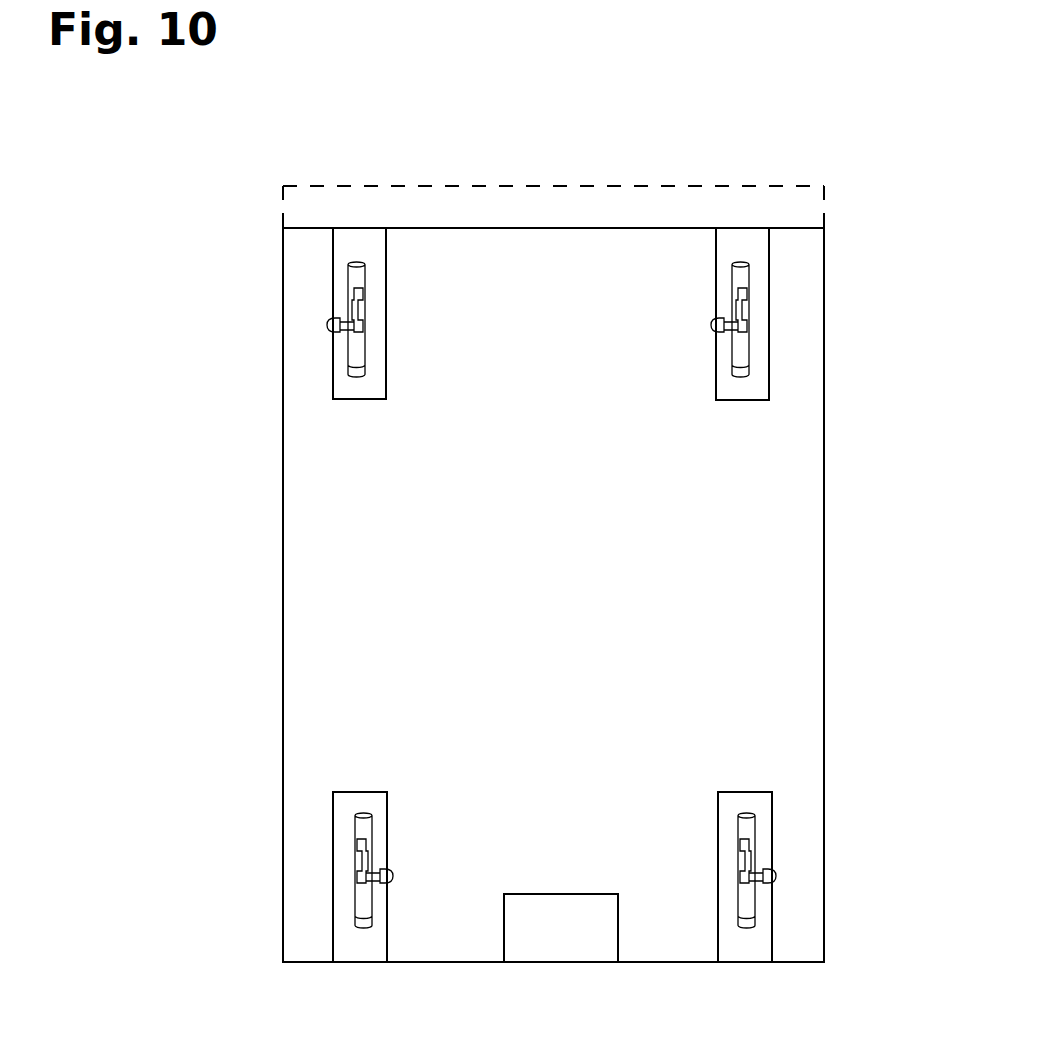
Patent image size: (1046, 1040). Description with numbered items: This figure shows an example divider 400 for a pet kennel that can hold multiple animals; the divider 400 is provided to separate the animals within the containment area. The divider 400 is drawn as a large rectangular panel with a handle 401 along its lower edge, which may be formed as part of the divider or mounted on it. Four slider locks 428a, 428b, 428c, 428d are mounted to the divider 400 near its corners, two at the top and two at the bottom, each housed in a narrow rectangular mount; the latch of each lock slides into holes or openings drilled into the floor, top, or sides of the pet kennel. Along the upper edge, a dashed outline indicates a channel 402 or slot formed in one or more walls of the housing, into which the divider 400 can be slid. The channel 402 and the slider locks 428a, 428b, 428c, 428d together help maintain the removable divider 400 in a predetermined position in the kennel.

The divider 400 is at (864, 178).
The handle 401 is at (552, 894).
The channel 402 is at (528, 182).
The slider lock 428a is at (355, 342).
The slider lock 428b is at (367, 827).
The slider lock 428c is at (747, 360).
The slider lock 428d is at (757, 843).